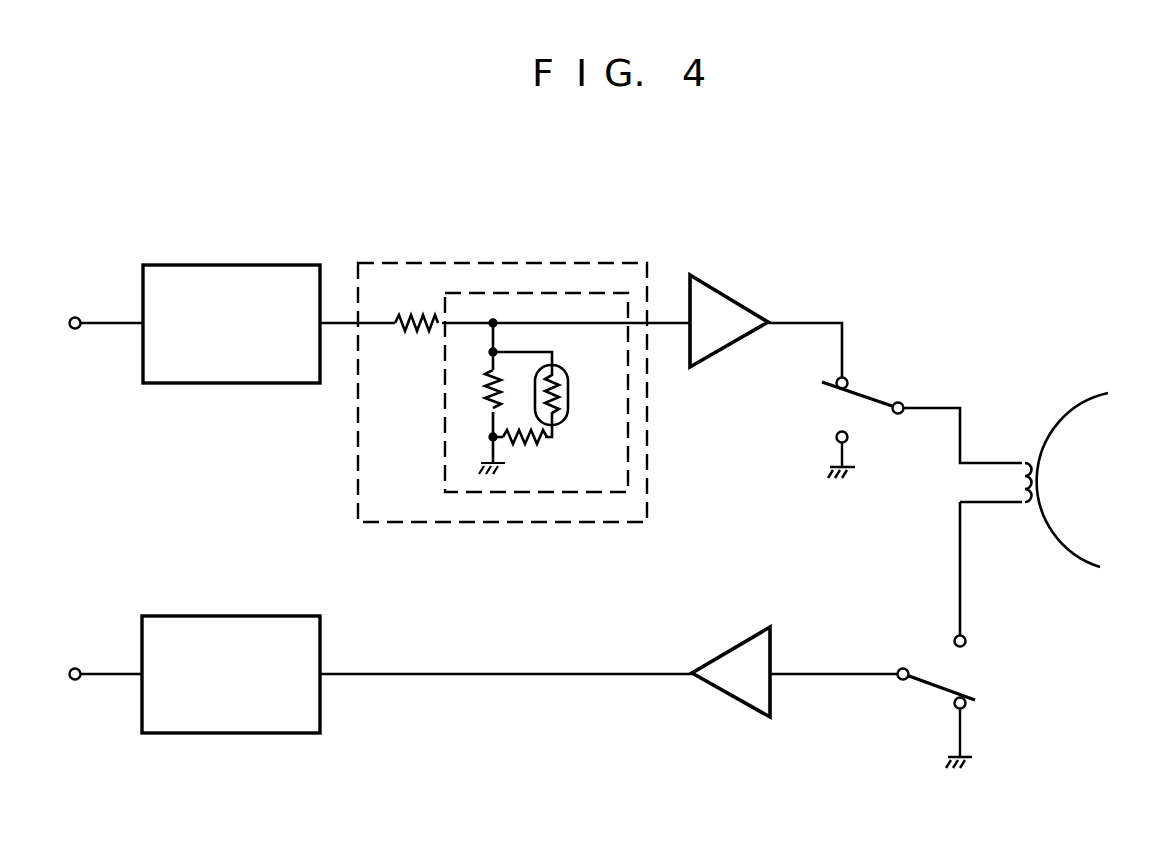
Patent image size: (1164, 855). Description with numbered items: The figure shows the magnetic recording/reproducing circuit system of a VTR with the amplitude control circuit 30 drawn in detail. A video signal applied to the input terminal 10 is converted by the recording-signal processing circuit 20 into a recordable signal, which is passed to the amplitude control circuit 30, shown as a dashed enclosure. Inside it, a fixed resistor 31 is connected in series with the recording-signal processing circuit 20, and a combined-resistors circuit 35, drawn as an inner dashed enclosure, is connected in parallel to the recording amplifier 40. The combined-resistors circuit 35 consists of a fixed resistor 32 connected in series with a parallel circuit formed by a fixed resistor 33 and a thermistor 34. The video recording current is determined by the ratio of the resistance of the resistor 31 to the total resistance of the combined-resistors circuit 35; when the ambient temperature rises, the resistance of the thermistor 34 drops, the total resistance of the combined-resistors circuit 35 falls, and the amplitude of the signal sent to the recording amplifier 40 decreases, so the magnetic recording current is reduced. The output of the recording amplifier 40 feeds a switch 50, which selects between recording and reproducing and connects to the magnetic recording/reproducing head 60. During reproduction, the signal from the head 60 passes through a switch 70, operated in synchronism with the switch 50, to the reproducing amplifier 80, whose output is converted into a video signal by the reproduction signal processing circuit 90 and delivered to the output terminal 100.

The input terminal 10 is at (75, 318).
The recording-signal processing circuit 20 is at (168, 264).
The amplitude control circuit 30 is at (390, 262).
The fixed resistor 31 is at (416, 334).
The fixed resistor 32 is at (486, 410).
The fixed resistor 33 is at (540, 442).
The thermistor 34 is at (567, 416).
The combined-resistors circuit 35 is at (476, 292).
The recording amplifier 40 is at (738, 298).
The switch 50 is at (846, 410).
The magnetic recording/reproducing head 60 is at (1025, 460).
The switch 70 is at (958, 669).
The reproducing amplifier 80 is at (720, 650).
The reproduction signal processing circuit 90 is at (208, 615).
The output terminal 100 is at (75, 668).